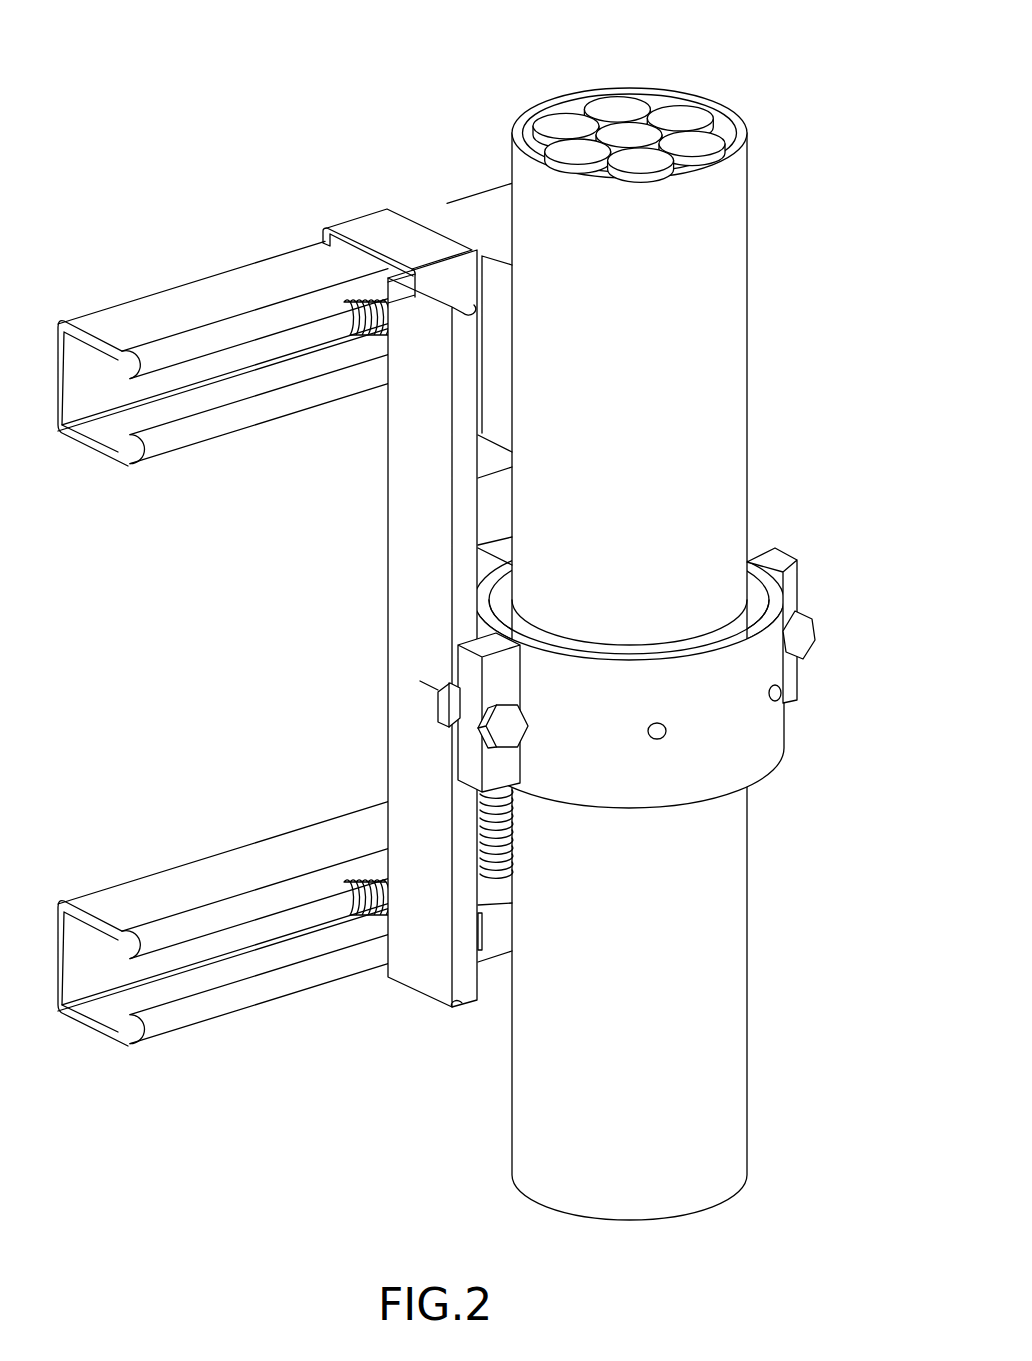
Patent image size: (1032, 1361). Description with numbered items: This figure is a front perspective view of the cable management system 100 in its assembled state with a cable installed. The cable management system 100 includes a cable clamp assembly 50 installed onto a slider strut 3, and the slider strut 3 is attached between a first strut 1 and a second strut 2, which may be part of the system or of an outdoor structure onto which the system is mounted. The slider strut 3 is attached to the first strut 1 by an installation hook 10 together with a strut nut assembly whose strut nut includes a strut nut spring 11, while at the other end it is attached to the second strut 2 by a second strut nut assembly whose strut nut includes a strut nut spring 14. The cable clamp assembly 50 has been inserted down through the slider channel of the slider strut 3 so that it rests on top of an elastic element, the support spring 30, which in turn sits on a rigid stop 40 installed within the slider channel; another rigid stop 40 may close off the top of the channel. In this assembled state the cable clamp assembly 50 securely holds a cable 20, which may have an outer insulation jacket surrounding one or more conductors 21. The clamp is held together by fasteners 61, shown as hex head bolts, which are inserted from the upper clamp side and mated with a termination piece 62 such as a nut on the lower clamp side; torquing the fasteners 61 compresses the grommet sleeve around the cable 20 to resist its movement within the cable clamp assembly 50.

The cable management system 100 is at (476, 610).
The first strut 1 is at (138, 318).
The second strut 2 is at (100, 897).
The slider strut 3 is at (432, 565).
The installation hook 10 is at (375, 232).
The strut nut spring 11 is at (370, 332).
The strut nut spring 14 is at (370, 917).
The cable 20 is at (718, 262).
The conductors 21 is at (688, 112).
The support spring 30 is at (508, 840).
The rigid stop 40 is at (493, 895).
The cable clamp assembly 50 is at (598, 610).
The fasteners 61 is at (508, 730).
The termination piece 62 is at (450, 698).